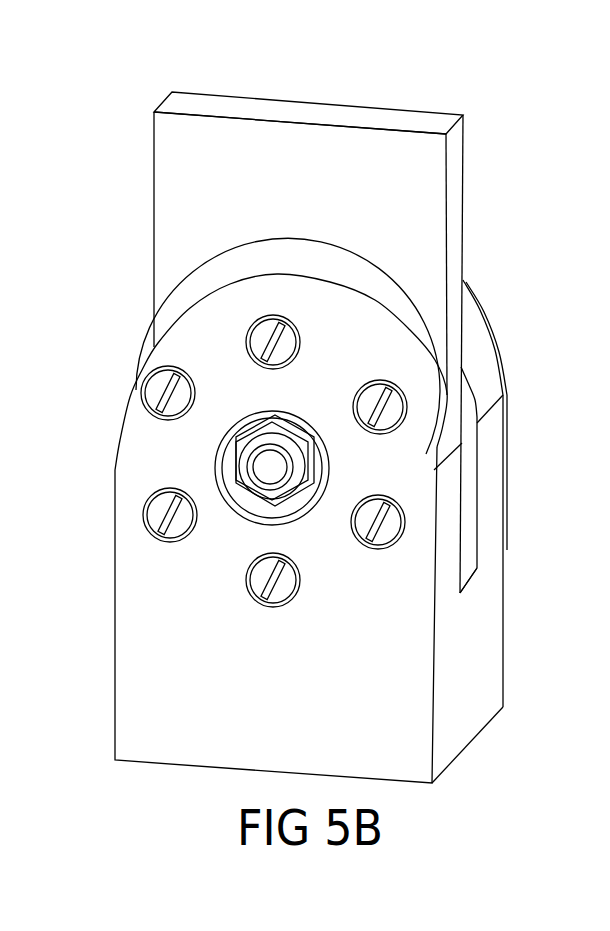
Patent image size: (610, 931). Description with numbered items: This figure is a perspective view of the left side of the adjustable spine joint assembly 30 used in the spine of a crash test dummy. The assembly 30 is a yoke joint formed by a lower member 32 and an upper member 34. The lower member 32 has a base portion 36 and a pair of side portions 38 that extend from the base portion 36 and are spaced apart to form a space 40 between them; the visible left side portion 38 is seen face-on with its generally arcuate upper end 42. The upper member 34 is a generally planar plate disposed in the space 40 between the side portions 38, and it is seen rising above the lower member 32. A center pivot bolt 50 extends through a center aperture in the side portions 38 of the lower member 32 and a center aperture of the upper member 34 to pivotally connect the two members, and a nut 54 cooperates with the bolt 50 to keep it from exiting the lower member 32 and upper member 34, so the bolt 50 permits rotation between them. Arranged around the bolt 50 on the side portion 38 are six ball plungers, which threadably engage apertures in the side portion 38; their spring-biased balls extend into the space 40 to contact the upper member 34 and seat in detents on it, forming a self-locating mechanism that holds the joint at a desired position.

The adjustable spine joint assembly 30 is at (512, 207).
The lower member 32 is at (503, 673).
The upper member 34 is at (317, 102).
The base portion 36 is at (466, 718).
The side portions 38 is at (445, 558).
The space 40 is at (470, 570).
The upper end 42 is at (477, 343).
The center pivot bolt 50 is at (263, 470).
The nut 54 is at (250, 427).